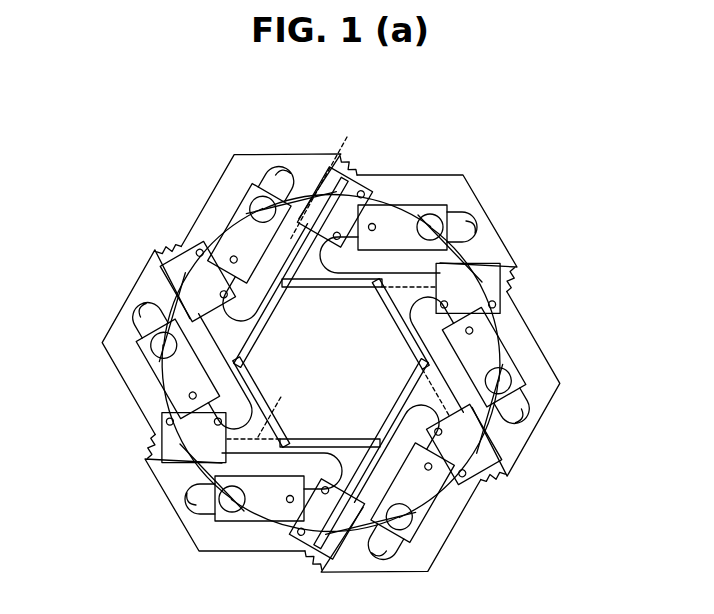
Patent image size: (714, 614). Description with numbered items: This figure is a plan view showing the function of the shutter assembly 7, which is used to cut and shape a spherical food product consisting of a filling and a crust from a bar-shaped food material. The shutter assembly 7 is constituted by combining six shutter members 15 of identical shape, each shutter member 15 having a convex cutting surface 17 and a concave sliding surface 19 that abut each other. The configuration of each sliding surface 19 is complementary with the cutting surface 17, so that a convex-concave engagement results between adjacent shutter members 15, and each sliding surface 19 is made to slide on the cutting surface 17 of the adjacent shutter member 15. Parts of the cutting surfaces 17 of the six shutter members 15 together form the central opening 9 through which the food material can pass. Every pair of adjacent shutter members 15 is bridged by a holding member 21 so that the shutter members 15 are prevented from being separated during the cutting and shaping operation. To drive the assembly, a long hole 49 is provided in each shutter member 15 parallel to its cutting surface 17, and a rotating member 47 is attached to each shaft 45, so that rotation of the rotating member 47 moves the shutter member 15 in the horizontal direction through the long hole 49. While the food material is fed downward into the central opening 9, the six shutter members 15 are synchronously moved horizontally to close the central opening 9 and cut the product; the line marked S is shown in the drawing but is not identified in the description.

The shutter assembly 7 is at (308, 155).
The central opening 9 is at (353, 398).
The shutter member 15 is at (128, 286).
The cutting surface 17 is at (320, 440).
The sliding surface 19 is at (270, 415).
The holding member 21 is at (157, 457).
The shaft 45 is at (140, 342).
The rotating member 47 is at (150, 367).
The long hole 49 is at (383, 553).
The axis line S is at (412, 203).